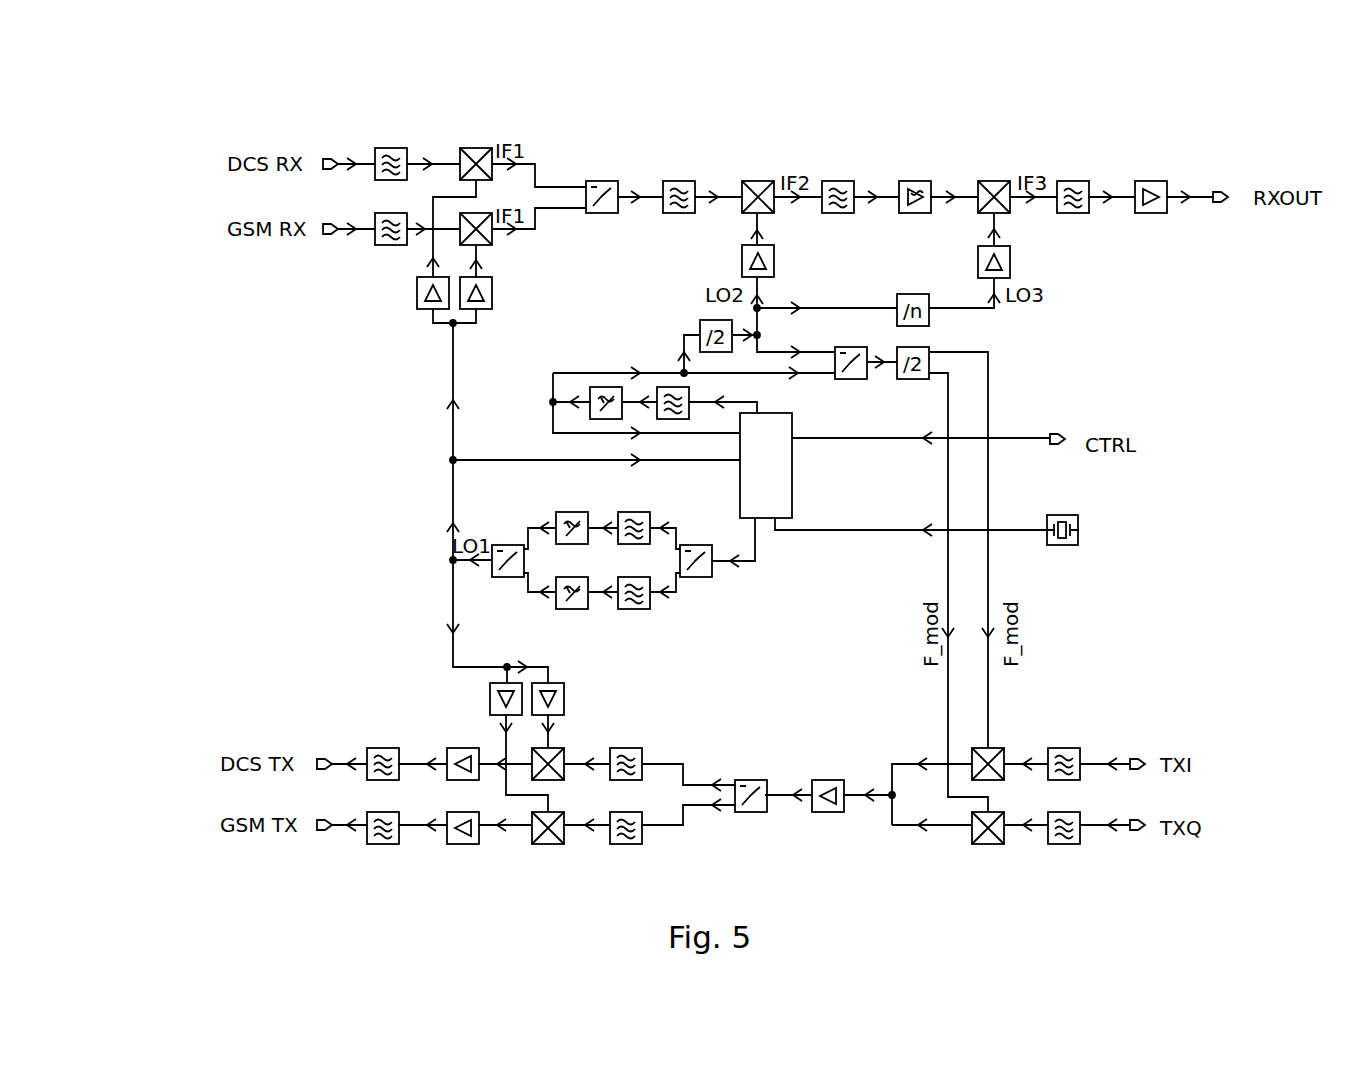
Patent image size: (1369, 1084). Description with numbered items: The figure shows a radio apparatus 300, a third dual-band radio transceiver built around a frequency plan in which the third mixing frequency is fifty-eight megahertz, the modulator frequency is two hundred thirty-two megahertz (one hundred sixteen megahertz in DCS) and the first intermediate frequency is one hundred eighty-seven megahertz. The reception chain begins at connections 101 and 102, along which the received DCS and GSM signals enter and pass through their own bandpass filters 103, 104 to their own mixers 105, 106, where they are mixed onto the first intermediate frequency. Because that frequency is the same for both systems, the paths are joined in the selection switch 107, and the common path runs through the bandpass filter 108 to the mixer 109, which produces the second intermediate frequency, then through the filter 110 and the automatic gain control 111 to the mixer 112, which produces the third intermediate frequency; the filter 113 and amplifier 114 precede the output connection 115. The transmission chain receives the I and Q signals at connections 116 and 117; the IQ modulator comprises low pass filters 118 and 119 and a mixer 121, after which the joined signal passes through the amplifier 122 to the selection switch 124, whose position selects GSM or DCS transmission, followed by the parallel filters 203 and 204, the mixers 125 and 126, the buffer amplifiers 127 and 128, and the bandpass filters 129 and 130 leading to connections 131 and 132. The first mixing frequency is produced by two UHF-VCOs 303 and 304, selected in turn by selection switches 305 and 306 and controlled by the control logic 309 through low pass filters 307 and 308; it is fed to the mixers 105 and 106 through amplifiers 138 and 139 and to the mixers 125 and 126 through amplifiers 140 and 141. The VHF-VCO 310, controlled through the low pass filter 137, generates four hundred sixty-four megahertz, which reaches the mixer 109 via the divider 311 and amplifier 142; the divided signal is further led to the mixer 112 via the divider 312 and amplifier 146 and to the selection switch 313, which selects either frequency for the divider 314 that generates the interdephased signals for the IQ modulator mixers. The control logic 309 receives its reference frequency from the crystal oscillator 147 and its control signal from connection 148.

The radio apparatus 300 is at (325, 478).
The line 101 is at (328, 157).
The line 102 is at (330, 237).
The bandpass filter 103 is at (390, 148).
The bandpass filter 104 is at (392, 245).
The mixer 105 is at (476, 148).
The mixer 106 is at (492, 235).
The selection switch 107 is at (601, 181).
The bandpass filter 108 is at (679, 181).
The mixer 109 is at (757, 181).
The bandpass filter 110 is at (837, 181).
The automatic gain control 111 is at (915, 181).
The mixer 112 is at (994, 181).
The filter 113 is at (1072, 181).
The amplifier 114 is at (1150, 181).
The connection 115 is at (1226, 190).
The I connection 116 is at (1140, 758).
The Q connection 117 is at (1137, 832).
The low pass filter 118 is at (1064, 748).
The low pass filter 119 is at (1064, 844).
The mixer 121 is at (988, 844).
The amplifier 122 is at (828, 812).
The selection switch 124 is at (750, 812).
The mixer 125 is at (548, 748).
The mixer 126 is at (552, 844).
The buffer amplifier 127 is at (462, 748).
The buffer amplifier 128 is at (462, 844).
The bandpass filter 129 is at (390, 748).
The bandpass filter 130 is at (390, 844).
The connection 131 is at (330, 758).
The connection 132 is at (332, 832).
The low pass filter 137 is at (666, 387).
The amplifier 138 is at (417, 295).
The amplifier 139 is at (492, 295).
The amplifier 140 is at (563, 690).
The amplifier 141 is at (490, 690).
The amplifier 142 is at (742, 263).
The amplifier 146 is at (1010, 263).
The crystal oscillator 147 is at (1078, 533).
The connection 148 is at (1056, 433).
The filter 203 is at (632, 748).
The filter 204 is at (632, 844).
The UHF-VCO 303 is at (572, 512).
The UHF-VCO 304 is at (578, 609).
The selection switch 305 is at (508, 545).
The selection switch 306 is at (697, 545).
The low pass filter 307 is at (634, 512).
The low pass filter 308 is at (640, 609).
The control logic 309 is at (782, 488).
The VHF-VCO 310 is at (598, 387).
The divider 311 is at (702, 320).
The divider 312 is at (920, 326).
The selection switch 313 is at (850, 379).
The divider 314 is at (913, 379).